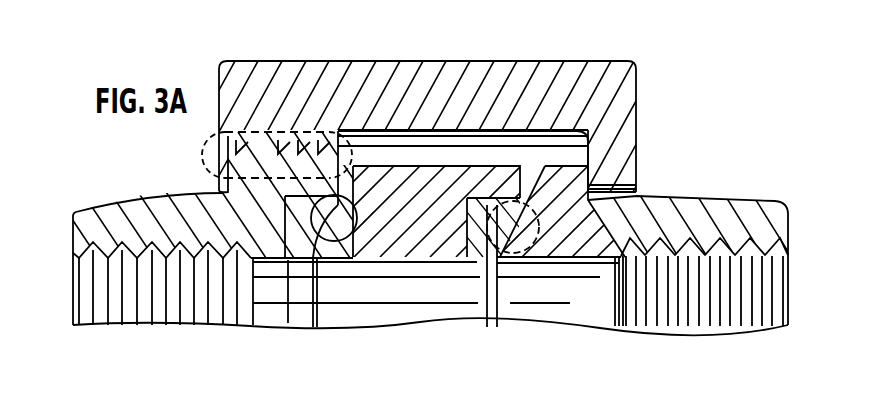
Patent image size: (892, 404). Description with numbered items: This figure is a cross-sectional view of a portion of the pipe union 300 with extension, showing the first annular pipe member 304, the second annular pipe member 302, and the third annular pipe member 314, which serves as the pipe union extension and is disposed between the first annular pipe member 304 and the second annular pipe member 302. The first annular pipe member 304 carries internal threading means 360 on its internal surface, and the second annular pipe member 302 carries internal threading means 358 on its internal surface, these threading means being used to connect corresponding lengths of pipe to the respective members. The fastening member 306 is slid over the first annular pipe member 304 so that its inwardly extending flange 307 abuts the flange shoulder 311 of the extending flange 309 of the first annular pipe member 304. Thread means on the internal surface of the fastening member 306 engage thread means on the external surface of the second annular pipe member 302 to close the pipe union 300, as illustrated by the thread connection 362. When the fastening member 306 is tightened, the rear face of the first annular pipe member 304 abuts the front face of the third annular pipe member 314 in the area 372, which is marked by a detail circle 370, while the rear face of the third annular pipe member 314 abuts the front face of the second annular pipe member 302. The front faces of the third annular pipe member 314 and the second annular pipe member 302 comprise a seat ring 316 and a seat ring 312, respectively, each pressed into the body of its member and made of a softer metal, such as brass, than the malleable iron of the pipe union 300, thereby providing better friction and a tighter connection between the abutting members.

The pipe union 300 is at (212, 70).
The second annular pipe member 302 is at (86, 208).
The first annular pipe member 304 is at (685, 198).
The fastening member 306 is at (617, 61).
The inwardly extending flange 307 is at (637, 166).
The extending flange 309 is at (587, 157).
The flange shoulder 311 is at (553, 187).
The seat ring 312 is at (274, 266).
The third annular pipe member 314 is at (436, 190).
The seat ring 316 is at (478, 297).
The internal threading means 358 is at (157, 274).
The internal threading means 360 is at (692, 282).
The thread connection 362 is at (193, 143).
The detail circle 370 is at (368, 178).
The area 372 is at (551, 263).